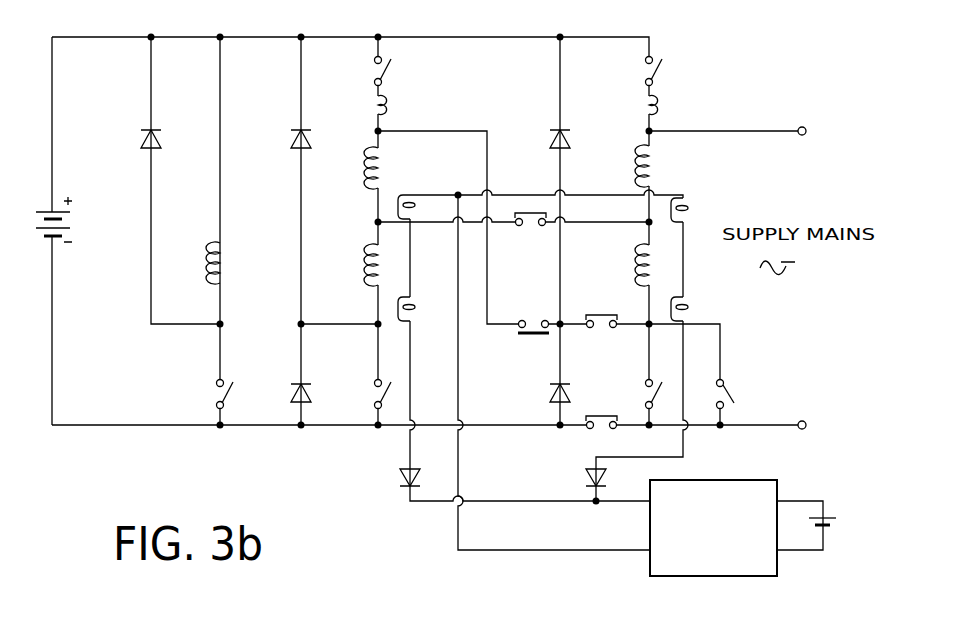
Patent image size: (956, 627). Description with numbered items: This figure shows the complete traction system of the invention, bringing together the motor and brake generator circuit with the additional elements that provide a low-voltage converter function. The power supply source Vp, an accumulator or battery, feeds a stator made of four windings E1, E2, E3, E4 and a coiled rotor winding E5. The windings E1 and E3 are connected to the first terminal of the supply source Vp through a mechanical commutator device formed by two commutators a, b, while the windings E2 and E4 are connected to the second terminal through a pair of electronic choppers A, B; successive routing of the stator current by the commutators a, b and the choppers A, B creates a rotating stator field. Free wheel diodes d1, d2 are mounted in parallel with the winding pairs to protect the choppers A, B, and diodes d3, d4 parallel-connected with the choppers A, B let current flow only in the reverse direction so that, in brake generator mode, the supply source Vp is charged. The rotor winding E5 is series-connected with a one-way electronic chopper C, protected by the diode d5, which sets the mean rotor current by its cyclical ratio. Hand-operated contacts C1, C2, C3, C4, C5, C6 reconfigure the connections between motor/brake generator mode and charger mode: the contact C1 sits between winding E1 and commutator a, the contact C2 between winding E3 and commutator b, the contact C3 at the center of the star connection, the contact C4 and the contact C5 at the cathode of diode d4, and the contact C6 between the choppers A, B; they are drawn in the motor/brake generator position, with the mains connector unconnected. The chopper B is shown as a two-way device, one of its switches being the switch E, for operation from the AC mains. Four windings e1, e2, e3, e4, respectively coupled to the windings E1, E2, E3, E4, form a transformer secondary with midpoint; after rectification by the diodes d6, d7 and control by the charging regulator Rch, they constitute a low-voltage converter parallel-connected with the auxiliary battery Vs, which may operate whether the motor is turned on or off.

The power supply source Vp is at (70, 220).
The free wheel diode d1 is at (288, 140).
The free wheel diode d2 is at (547, 140).
The diode d3 is at (288, 394).
The diode d4 is at (547, 394).
The diode d5 is at (136, 140).
The rectifier diode d6 is at (396, 481).
The rectifier diode d7 is at (583, 481).
The stator winding E1 is at (392, 168).
The stator winding E2 is at (359, 265).
The stator winding E3 is at (662, 166).
The stator winding E4 is at (629, 265).
The rotor winding E5 is at (234, 263).
The first contact C1 is at (399, 106).
The second contact C2 is at (670, 106).
The third contact C3 is at (530, 232).
The fourth contact C4 is at (533, 313).
The fifth contact C5 is at (601, 307).
The sixth contact C6 is at (601, 410).
The commutator a is at (391, 71).
The commutator b is at (662, 71).
The chopper A is at (373, 394).
The chopper B is at (645, 394).
The chopper C is at (234, 394).
The switch E is at (736, 394).
The secondary winding e1 is at (423, 207).
The secondary winding e2 is at (423, 310).
The secondary winding e3 is at (695, 210).
The secondary winding e4 is at (695, 309).
The charging regulator Rch is at (718, 480).
The auxiliary battery Vs is at (811, 532).